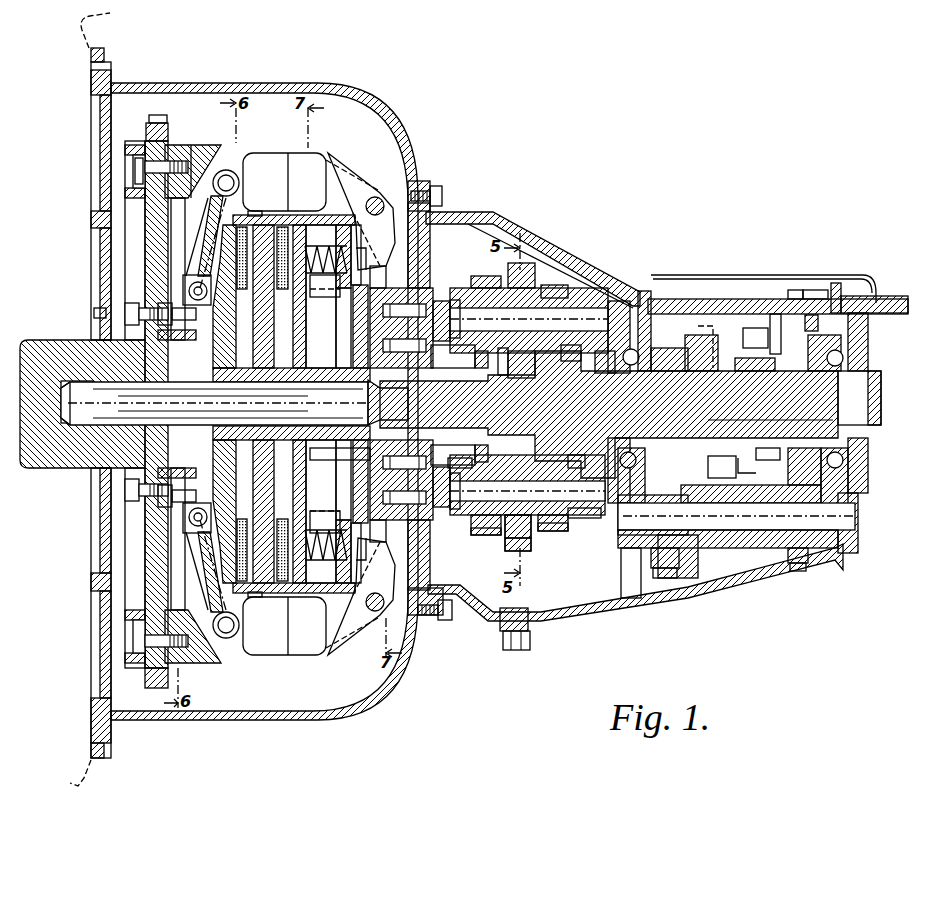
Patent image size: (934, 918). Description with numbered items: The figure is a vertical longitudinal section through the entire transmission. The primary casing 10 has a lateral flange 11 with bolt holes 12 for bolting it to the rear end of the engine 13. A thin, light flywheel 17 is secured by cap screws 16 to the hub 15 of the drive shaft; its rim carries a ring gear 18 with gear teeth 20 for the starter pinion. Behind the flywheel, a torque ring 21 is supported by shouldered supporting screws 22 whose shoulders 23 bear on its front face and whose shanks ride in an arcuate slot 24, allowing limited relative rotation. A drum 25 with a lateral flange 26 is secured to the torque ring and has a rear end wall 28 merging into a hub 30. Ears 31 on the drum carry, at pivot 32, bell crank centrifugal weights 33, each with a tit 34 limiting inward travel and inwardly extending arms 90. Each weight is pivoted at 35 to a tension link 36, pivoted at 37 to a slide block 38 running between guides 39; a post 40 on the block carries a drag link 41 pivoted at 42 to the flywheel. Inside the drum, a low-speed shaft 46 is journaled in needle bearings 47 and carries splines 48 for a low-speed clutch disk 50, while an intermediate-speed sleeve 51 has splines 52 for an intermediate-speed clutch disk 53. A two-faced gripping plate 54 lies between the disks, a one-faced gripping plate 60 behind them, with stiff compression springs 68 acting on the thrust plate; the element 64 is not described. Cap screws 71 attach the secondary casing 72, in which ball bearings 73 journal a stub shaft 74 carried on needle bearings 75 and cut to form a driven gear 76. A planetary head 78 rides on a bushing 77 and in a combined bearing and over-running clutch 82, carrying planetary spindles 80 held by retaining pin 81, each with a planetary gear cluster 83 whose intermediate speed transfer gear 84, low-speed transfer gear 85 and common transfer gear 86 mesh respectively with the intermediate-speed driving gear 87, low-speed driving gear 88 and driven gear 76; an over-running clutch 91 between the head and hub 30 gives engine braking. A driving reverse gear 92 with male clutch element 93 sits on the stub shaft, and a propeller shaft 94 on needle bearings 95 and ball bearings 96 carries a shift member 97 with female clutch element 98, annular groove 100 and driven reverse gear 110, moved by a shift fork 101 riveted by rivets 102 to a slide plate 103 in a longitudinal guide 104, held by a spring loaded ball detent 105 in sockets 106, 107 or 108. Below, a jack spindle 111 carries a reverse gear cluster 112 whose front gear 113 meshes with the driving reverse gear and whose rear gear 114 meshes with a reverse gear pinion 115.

The primary casing 10 is at (126, 76).
The lateral flange 11 is at (88, 38).
The bolt holes 12 is at (97, 60).
The engine 13 is at (98, 397).
The hub 15 is at (126, 300).
The cap screws 16 is at (103, 306).
The flywheel 17 is at (135, 250).
The ring gear 18 is at (138, 124).
The gear teeth 20 is at (150, 107).
The torque ring 21 is at (195, 137).
The supporting screws 22 is at (126, 160).
The shoulders 23 is at (186, 135).
The arcuate slot 24 is at (128, 156).
The drum 25 is at (289, 403).
The lateral flange 26 is at (258, 648).
The rear end wall 28 is at (372, 280).
The hub 30 is at (366, 372).
The ears 31 is at (352, 164).
The pivot 32 is at (370, 190).
The centrifugal weight 33 is at (306, 148).
The tit 34 is at (266, 204).
The pivot 35 is at (226, 165).
The tension link 36 is at (197, 228).
The pivot 37 is at (188, 272).
The slide block 38 is at (160, 502).
The guides 39 is at (182, 210).
The post 40 is at (172, 328).
The drag link 41 is at (178, 316).
The pivot 42 is at (168, 450).
The low-speed shaft 46 is at (214, 403).
The needle bearings 47 is at (113, 381).
The splines 48 is at (170, 379).
The low-speed clutch disk 50 is at (232, 308).
The intermediate-speed sleeve 51 is at (342, 356).
The splines 52 is at (312, 445).
The intermediate-speed clutch disk 53 is at (270, 325).
The two-faced gripping plate 54 is at (255, 404).
The one-faced gripping plate 60 is at (300, 332).
The spring seat 64 is at (347, 404).
The compression springs 68 is at (320, 240).
The cap screws 71 is at (438, 190).
The secondary casing 72 is at (505, 222).
The ball bearings 73 is at (624, 338).
The stub shaft 74 is at (609, 414).
The needle bearings 75 is at (568, 330).
The driven gear 76 is at (602, 460).
The bushing 77 is at (580, 340).
The planetary head 78 is at (443, 284).
The planetary spindles 80 is at (530, 274).
The retaining pin 81 is at (452, 300).
The combined bearing and over-running clutch 82 is at (382, 280).
The planetary gear cluster 83 is at (522, 532).
The intermediate speed transfer gear 84 is at (478, 528).
The low-speed transfer gear 85 is at (510, 544).
The common transfer gear 86 is at (546, 524).
The intermediate-speed driving gear 87 is at (435, 476).
The low-speed driving gear 88 is at (460, 465).
The inwardly extending arms 90 is at (376, 258).
The over-running clutch 91 is at (432, 347).
The driving reverse gear 92 is at (676, 325).
The male clutch element 93 is at (696, 318).
The propeller shaft 94 is at (868, 386).
The needle bearings 95 is at (783, 392).
The ball bearings 96 is at (848, 348).
The shift member 97 is at (780, 354).
The female clutch element 98 is at (668, 330).
The annular groove 100 is at (750, 474).
The shift fork 101 is at (735, 343).
The rivets 102 is at (756, 291).
The slide plate 103 is at (832, 282).
The longitudinal guide 104 is at (862, 290).
The spring loaded ball detent 105 is at (806, 282).
The socket 106 is at (766, 330).
The socket 107 is at (797, 312).
The socket 108 is at (788, 282).
The driven reverse gear 110 is at (762, 456).
The jack spindle 111 is at (716, 540).
The reverse gear cluster 112 is at (698, 540).
The front gear 113 is at (665, 592).
The rear gear 114 is at (790, 563).
The reverse gear pinion 115 is at (768, 455).